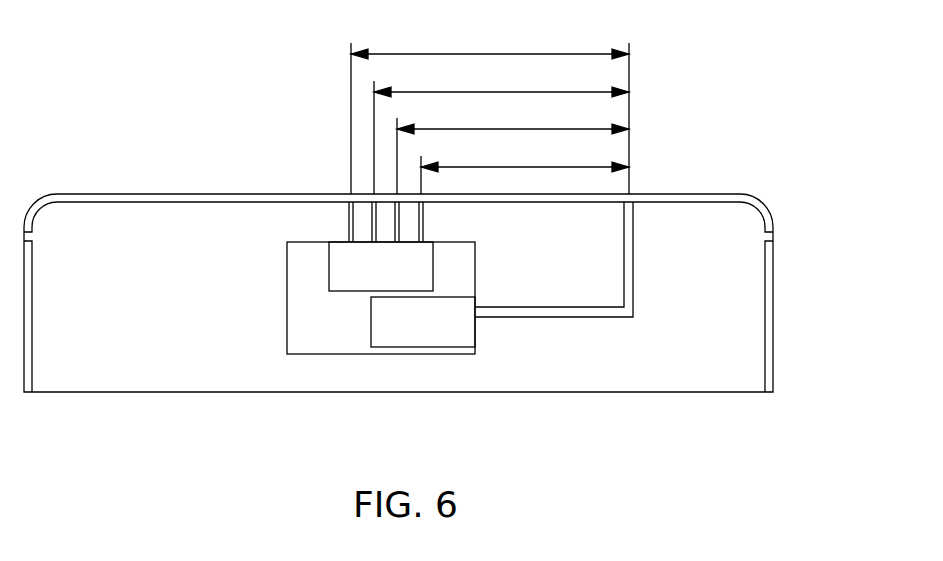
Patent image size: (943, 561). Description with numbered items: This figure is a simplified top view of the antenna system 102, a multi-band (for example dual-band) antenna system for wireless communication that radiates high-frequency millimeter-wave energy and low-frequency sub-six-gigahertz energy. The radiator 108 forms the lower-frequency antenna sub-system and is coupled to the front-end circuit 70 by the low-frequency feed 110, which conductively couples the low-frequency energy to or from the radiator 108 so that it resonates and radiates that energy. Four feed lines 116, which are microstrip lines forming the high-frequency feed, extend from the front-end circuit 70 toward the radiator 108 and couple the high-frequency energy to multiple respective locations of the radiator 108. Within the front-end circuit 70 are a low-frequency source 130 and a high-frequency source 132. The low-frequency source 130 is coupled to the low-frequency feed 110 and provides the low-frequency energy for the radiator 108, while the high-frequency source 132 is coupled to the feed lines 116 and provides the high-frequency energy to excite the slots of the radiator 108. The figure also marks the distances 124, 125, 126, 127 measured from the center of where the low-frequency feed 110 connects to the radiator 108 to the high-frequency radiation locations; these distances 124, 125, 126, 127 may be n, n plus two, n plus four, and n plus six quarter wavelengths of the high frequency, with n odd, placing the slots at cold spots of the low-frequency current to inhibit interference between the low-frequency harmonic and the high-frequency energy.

The antenna system 102 is at (424, 216).
The radiator 108 is at (210, 193).
The low-frequency feed 110 is at (635, 278).
The feed lines 116 is at (347, 219).
The front-end circuit 70 is at (287, 322).
The high-frequency source 132 is at (329, 266).
The low-frequency source 130 is at (425, 345).
The distance 124 is at (505, 167).
The distance 125 is at (505, 129).
The distance 126 is at (505, 92).
The distance 127 is at (505, 54).